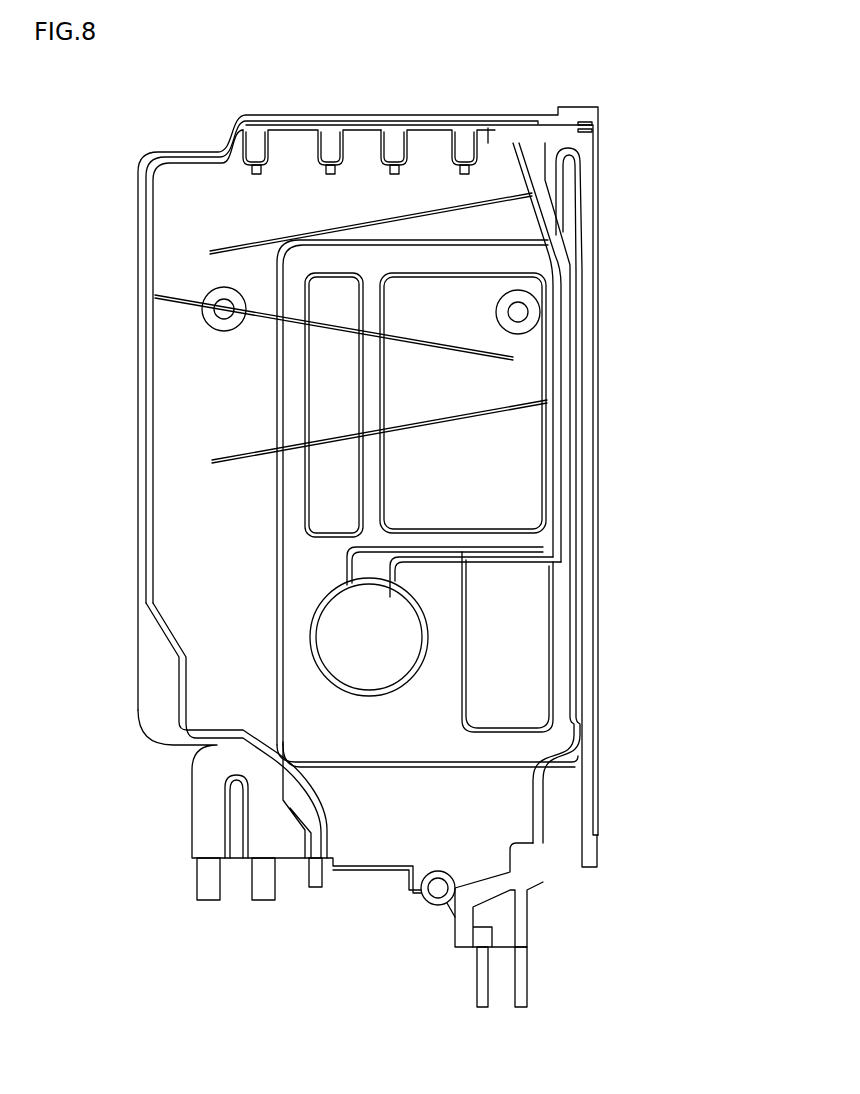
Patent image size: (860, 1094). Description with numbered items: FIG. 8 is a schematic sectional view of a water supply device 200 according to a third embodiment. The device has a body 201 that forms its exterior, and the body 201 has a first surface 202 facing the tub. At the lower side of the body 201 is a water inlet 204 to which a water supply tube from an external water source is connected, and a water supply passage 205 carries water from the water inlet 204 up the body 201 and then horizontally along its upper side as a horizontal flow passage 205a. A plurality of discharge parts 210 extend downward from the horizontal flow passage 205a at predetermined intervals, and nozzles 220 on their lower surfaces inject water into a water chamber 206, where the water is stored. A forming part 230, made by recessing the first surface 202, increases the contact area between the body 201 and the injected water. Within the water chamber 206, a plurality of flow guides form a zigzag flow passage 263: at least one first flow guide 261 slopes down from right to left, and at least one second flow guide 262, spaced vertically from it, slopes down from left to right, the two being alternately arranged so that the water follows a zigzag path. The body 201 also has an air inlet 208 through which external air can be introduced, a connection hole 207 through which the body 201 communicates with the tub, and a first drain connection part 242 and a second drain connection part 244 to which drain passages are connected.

The water supply device 200 is at (110, 256).
The body 201 is at (197, 152).
The first surface 202 is at (435, 185).
The water inlet 204 is at (317, 880).
The water supply passage 205 is at (163, 635).
The horizontal flow passage 205a is at (360, 130).
The water chamber 206 is at (523, 663).
The connection hole 207 is at (365, 650).
The air inlet 208 is at (578, 108).
The discharge parts 210 is at (270, 150).
The nozzles 220 is at (475, 168).
The forming part 230 is at (527, 257).
The first drain connection part 242 is at (262, 892).
The second drain connection part 244 is at (207, 892).
The first flow guide 261 is at (480, 203).
The second flow guide 262 is at (192, 303).
The zigzag flow passage 263 is at (470, 324).